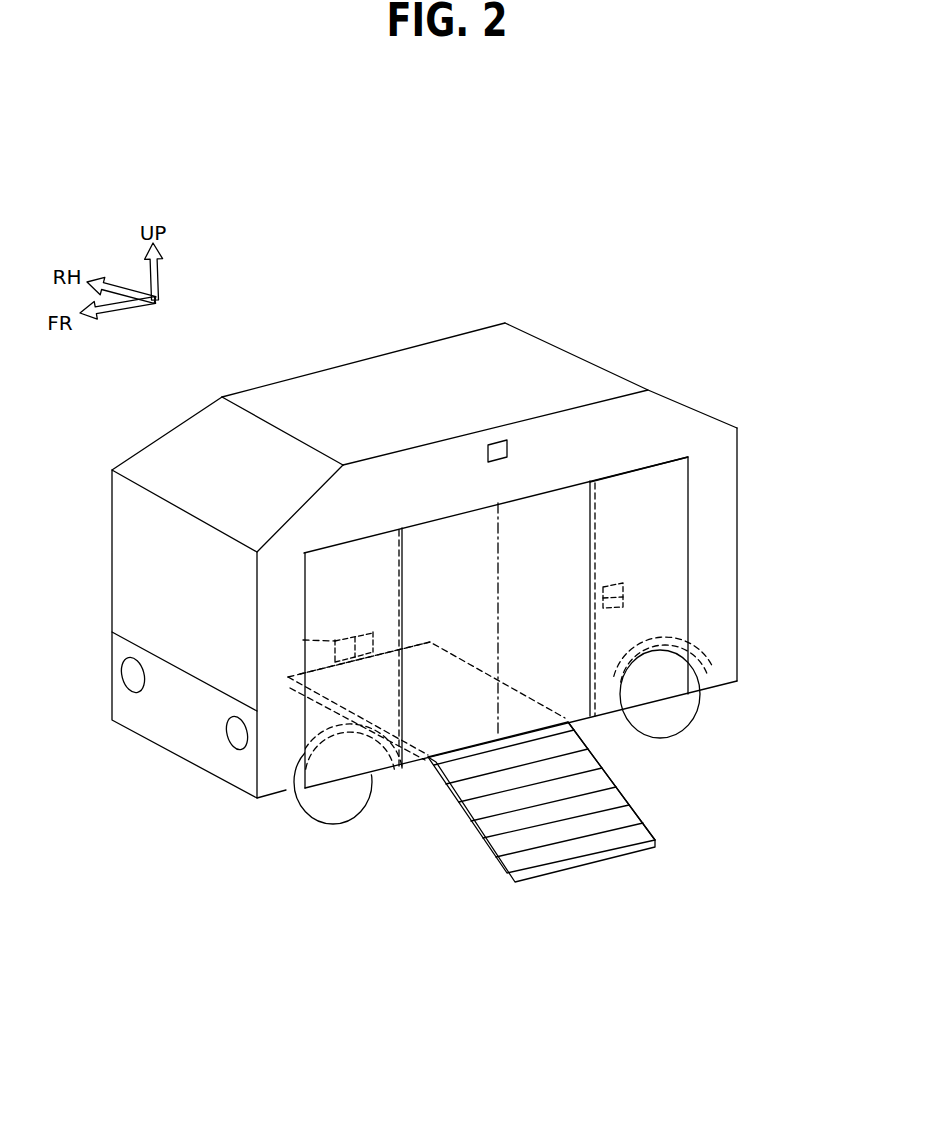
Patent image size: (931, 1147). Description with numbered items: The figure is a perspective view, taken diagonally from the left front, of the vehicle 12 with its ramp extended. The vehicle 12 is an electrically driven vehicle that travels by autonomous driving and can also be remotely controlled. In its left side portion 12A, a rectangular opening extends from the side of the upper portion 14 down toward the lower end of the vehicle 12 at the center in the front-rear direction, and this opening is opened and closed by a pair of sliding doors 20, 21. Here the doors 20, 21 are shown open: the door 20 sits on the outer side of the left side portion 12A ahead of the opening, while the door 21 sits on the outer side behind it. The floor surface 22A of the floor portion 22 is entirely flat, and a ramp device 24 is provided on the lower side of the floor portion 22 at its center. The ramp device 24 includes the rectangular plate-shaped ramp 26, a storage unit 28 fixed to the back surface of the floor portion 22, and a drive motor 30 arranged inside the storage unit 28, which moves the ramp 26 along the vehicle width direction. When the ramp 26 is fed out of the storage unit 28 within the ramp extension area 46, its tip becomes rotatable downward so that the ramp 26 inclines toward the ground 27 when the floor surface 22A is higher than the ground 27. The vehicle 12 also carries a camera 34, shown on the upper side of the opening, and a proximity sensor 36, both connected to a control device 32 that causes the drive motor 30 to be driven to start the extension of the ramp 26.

The vehicle 12 is at (707, 327).
The left side portion 12A is at (720, 586).
The upper portion 14 is at (450, 462).
The door 20 is at (383, 555).
The door 21 is at (642, 508).
The floor portion 22 is at (460, 720).
The floor surface 22A is at (426, 753).
The ramp device 24 is at (527, 688).
The ramp 26 is at (584, 837).
The ground 27 is at (670, 823).
The storage unit 28 is at (445, 650).
The drive motor 30 is at (303, 640).
The control device 32 is at (372, 630).
The camera 34 is at (500, 443).
The proximity sensor 36 is at (625, 597).
The ramp extension area 46 is at (488, 865).